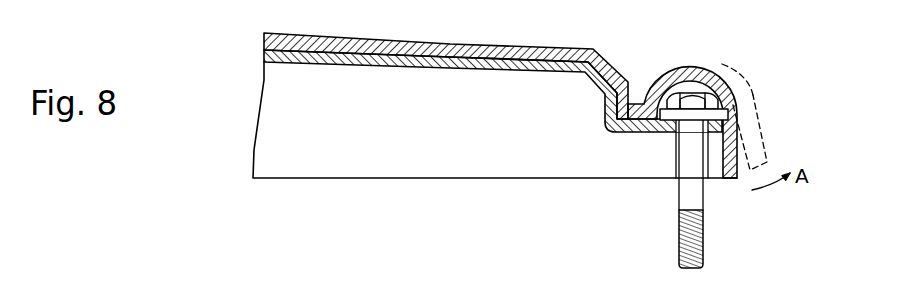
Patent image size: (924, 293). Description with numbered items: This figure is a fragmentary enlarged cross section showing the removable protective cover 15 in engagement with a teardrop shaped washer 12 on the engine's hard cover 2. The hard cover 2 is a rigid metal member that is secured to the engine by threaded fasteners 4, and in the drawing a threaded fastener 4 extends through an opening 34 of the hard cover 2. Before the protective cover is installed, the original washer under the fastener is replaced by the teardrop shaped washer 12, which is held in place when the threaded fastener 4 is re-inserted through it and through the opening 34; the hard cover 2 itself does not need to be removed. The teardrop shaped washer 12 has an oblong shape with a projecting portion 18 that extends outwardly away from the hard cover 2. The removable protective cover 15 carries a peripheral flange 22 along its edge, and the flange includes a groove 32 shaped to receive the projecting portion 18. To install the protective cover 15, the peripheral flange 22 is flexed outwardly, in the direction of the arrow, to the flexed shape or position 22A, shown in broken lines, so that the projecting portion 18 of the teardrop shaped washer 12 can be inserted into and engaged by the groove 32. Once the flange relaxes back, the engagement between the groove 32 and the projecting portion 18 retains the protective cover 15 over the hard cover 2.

The hard cover 2 is at (290, 61).
The threaded fastener 4 is at (705, 197).
The teardrop shaped washer 12 is at (722, 115).
The removable protective cover 15 is at (545, 45).
The projecting portion of teardrop shaped washer 18 is at (733, 112).
The peripheral flange 22 is at (737, 168).
The flexed position of peripheral flange 22A is at (767, 157).
The groove 32 is at (730, 78).
The opening of hard cover 34 is at (674, 128).